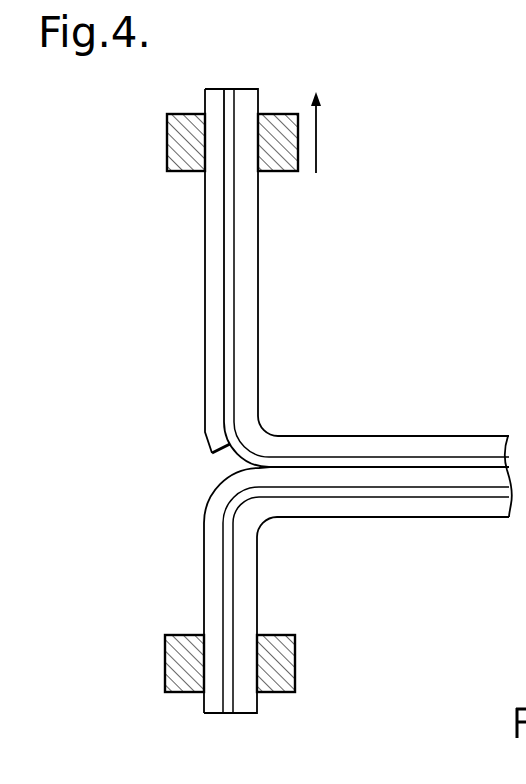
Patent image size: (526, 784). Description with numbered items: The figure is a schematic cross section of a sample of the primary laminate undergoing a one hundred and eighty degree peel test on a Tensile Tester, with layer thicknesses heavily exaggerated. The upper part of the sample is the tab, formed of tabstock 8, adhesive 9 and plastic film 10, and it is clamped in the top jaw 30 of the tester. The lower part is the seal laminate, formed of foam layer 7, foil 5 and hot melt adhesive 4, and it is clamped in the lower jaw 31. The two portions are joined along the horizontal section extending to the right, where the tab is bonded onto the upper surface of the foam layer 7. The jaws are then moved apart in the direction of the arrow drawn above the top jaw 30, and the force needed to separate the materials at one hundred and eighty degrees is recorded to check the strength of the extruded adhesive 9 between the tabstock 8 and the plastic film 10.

The hot melt adhesive 4 is at (247, 703).
The foil 5 is at (225, 708).
The foam layer 7 is at (208, 700).
The tabstock 8 is at (216, 95).
The adhesive 9 is at (233, 328).
The plastic film 10 is at (248, 232).
The top jaw 30 is at (167, 155).
The lower jaw 31 is at (165, 672).